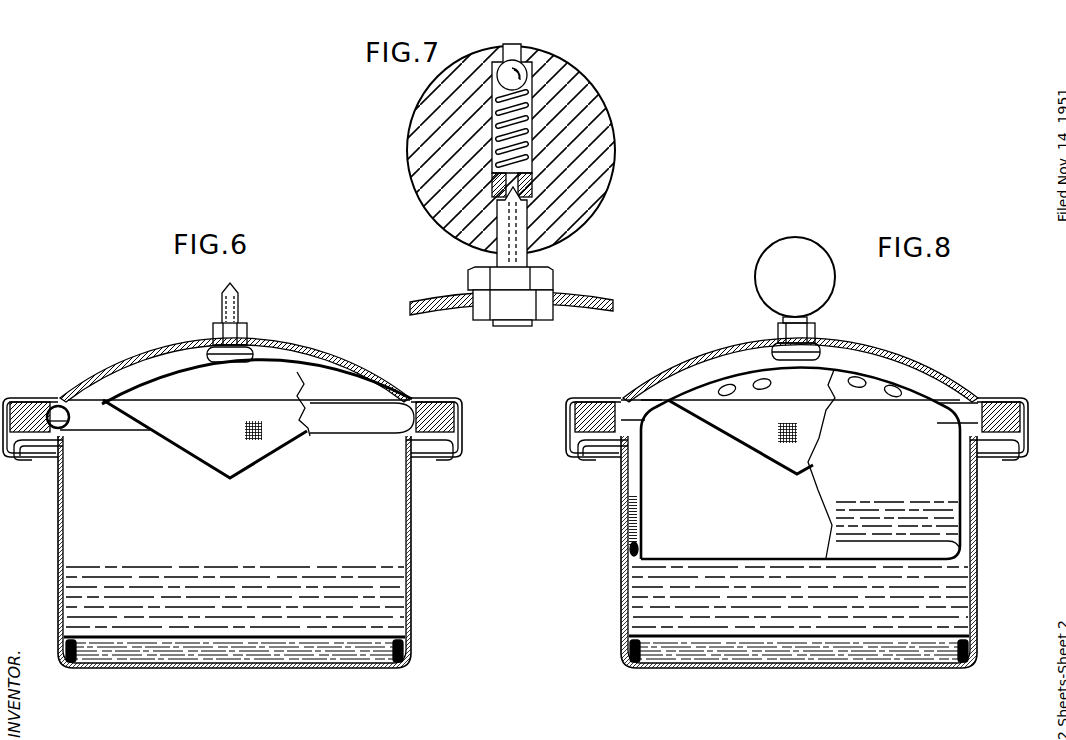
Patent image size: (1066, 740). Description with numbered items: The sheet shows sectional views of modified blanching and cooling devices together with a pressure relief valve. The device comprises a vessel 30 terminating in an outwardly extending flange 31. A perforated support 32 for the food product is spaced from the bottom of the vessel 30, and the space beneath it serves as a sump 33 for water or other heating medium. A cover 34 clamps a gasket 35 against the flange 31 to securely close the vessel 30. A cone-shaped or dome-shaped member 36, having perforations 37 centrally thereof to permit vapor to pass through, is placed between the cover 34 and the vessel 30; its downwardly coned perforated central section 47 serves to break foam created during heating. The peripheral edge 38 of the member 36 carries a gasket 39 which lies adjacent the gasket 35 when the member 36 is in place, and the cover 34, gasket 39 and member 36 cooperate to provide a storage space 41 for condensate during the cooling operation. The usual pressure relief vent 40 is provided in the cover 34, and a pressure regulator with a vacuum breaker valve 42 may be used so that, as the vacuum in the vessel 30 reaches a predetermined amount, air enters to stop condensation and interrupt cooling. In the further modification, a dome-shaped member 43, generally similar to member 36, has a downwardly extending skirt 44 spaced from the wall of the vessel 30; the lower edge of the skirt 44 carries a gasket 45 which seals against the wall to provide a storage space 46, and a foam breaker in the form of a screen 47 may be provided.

In FIG. 6, the vessel 30 is at (410, 513).
In FIG. 8, the vessel 30 is at (627, 605).
In FIG. 6, the flange 31 is at (47, 447).
In FIG. 8, the flange 31 is at (601, 448).
In FIG. 6, the perforated support 32 is at (323, 637).
In FIG. 6, the sump 33 is at (197, 650).
In FIG. 6, the cover 34 is at (333, 355).
In FIG. 8, the cover 34 is at (860, 341).
In FIG. 6, the gasket 35 is at (462, 424).
In FIG. 8, the gasket 35 is at (1027, 430).
In FIG. 6, the cone-shaped member 36 is at (118, 393).
In FIG. 6, the perforations 37 is at (172, 370).
In FIG. 6, the peripheral edge 38 is at (50, 403).
In FIG. 6, the gasket 39 is at (58, 404).
In FIG. 6, the pressure relief vent 40 is at (228, 332).
In FIG. 7, the pressure relief vent 40 is at (513, 260).
In FIG. 6, the storage space 41 is at (73, 399).
In FIG. 7, the vacuum breaker valve 42 is at (598, 193).
In FIG. 8, the dome-shaped member 43 is at (726, 378).
In FIG. 8, the skirt 44 is at (642, 490).
In FIG. 8, the gasket 45 is at (630, 552).
In FIG. 8, the storage space 46 is at (634, 518).
In FIG. 6, the screen 47 is at (262, 430).
In FIG. 8, the screen 47 is at (783, 424).